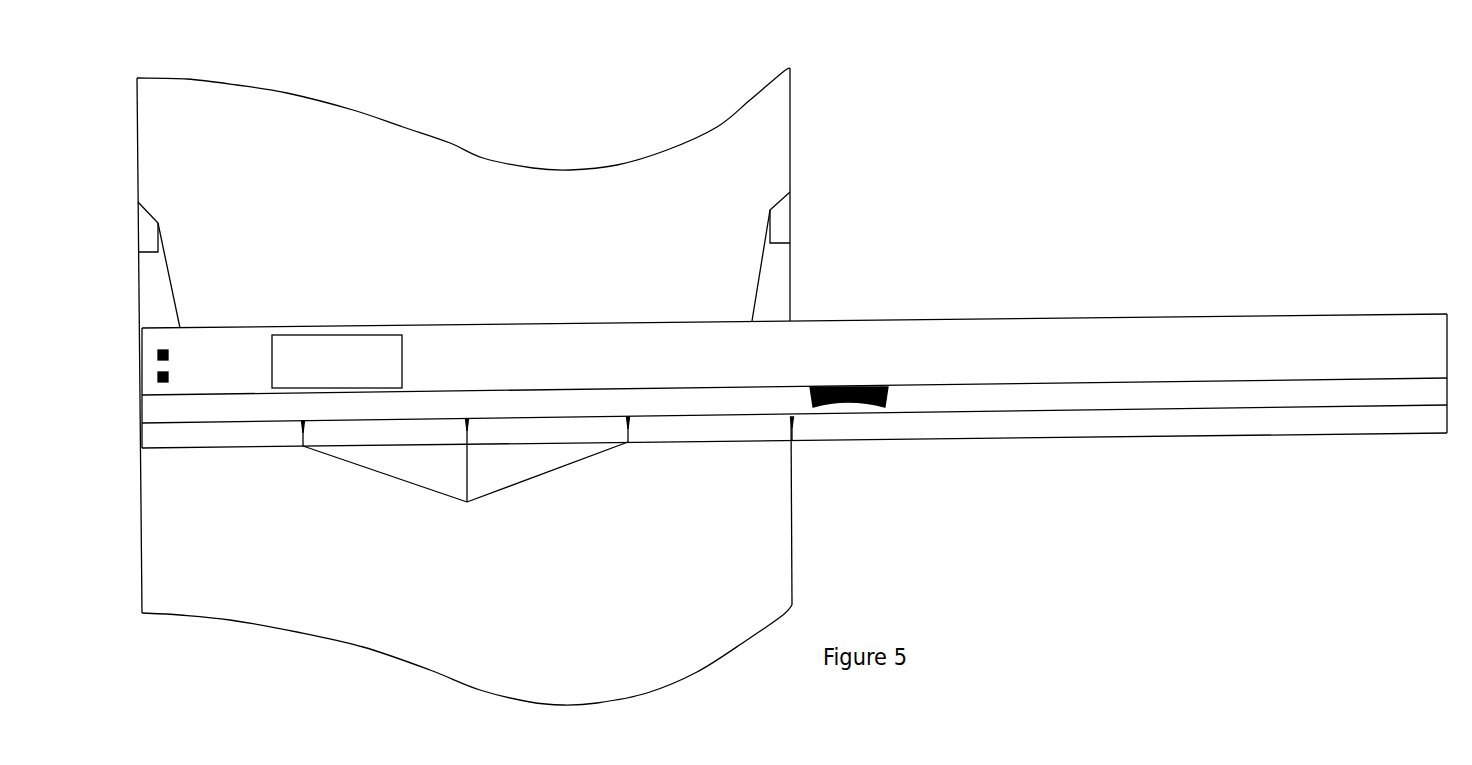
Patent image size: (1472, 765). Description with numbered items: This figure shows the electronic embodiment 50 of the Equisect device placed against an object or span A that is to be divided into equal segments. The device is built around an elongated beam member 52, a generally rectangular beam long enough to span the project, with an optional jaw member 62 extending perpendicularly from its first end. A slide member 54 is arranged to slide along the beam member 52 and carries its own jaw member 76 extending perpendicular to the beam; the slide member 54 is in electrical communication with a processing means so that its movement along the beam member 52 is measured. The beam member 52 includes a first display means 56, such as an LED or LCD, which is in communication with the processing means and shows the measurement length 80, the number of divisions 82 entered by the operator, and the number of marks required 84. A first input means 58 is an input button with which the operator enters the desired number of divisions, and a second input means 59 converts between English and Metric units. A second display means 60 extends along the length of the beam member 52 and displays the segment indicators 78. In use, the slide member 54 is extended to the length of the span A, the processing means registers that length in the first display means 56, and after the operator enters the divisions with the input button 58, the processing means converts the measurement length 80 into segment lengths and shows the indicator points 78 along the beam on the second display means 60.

The object or span A is at (255, 85).
The electronic embodiment 50 is at (792, 351).
The elongated beam member 52 is at (467, 325).
The slide member 54 is at (848, 402).
The first display means 56 is at (315, 345).
The first input means 58 is at (170, 353).
The second input means 59 is at (165, 383).
The second display means 60 is at (1043, 423).
The jaw member 62 is at (150, 228).
The jaw member 76 is at (777, 235).
The segment indicators 78 is at (466, 470).
The measurement length 80 is at (348, 353).
The number of divisions 82 is at (287, 337).
The number of marks required 84 is at (287, 377).